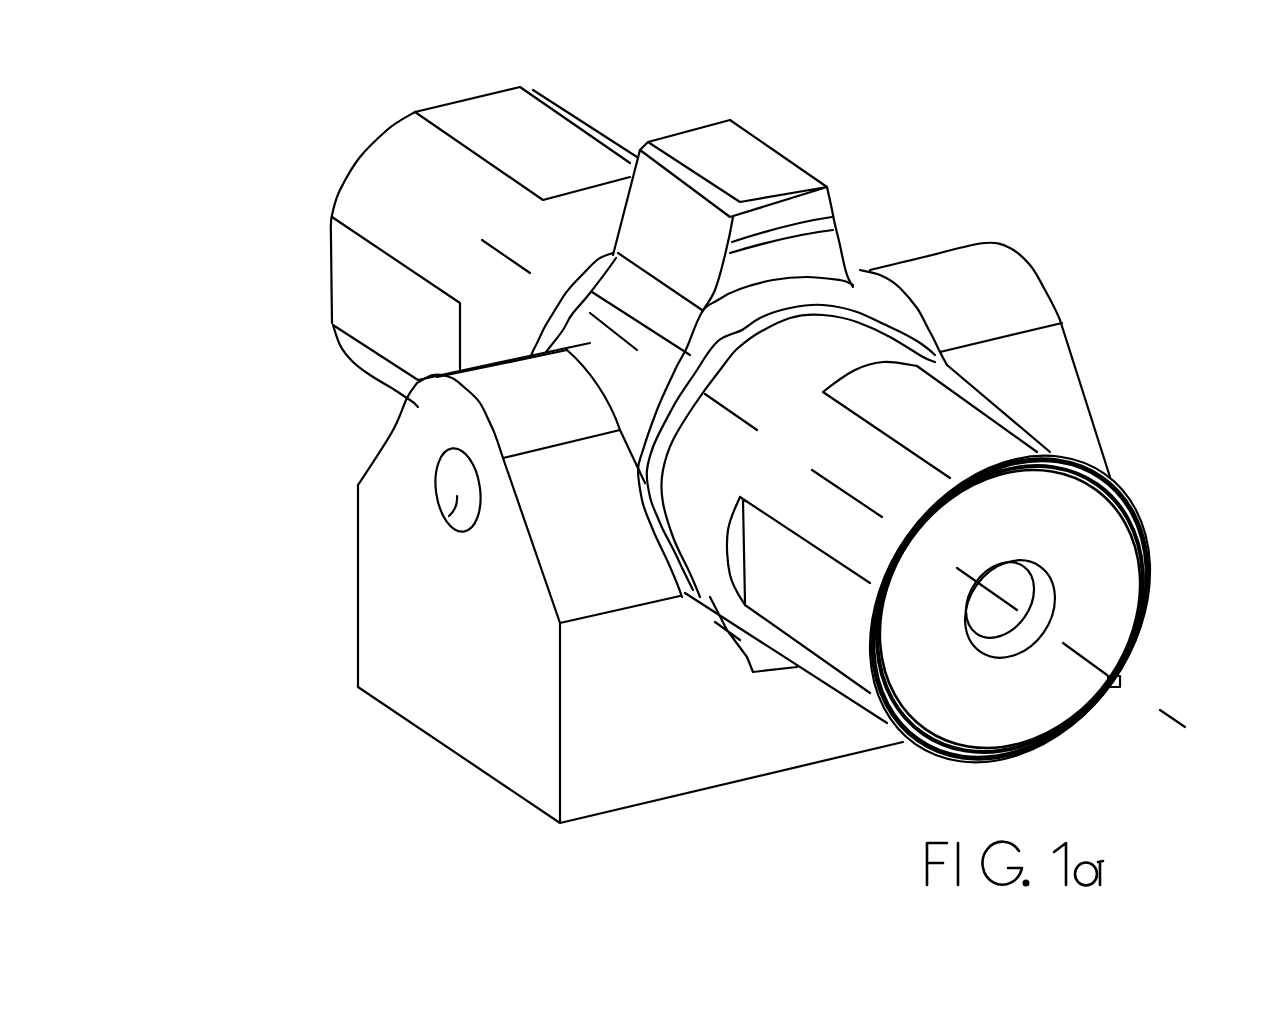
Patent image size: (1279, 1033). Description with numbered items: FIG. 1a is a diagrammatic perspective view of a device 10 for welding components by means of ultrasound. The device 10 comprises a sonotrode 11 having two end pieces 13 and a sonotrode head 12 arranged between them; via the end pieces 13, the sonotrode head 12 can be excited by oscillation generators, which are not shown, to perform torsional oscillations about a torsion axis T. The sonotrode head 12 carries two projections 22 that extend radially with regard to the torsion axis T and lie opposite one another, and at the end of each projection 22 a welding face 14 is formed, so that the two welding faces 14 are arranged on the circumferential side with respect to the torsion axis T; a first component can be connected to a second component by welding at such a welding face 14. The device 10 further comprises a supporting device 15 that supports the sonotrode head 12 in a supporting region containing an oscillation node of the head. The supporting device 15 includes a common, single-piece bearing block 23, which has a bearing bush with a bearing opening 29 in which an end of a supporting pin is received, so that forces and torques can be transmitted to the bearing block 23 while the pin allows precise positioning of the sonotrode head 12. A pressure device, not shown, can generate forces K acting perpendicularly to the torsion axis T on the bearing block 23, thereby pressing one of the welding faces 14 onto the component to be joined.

The device 10 is at (275, 140).
The sonotrode 11 is at (592, 99).
The sonotrode head 12 is at (626, 346).
The end pieces 13 is at (352, 268).
The welding face 14 is at (748, 160).
The supporting device 15 is at (878, 246).
The projections 22 is at (812, 207).
The bearing block 23 is at (1060, 410).
The bearing opening 29 is at (457, 500).
The torsion axis T is at (1170, 721).
The forces K is at (743, 795).